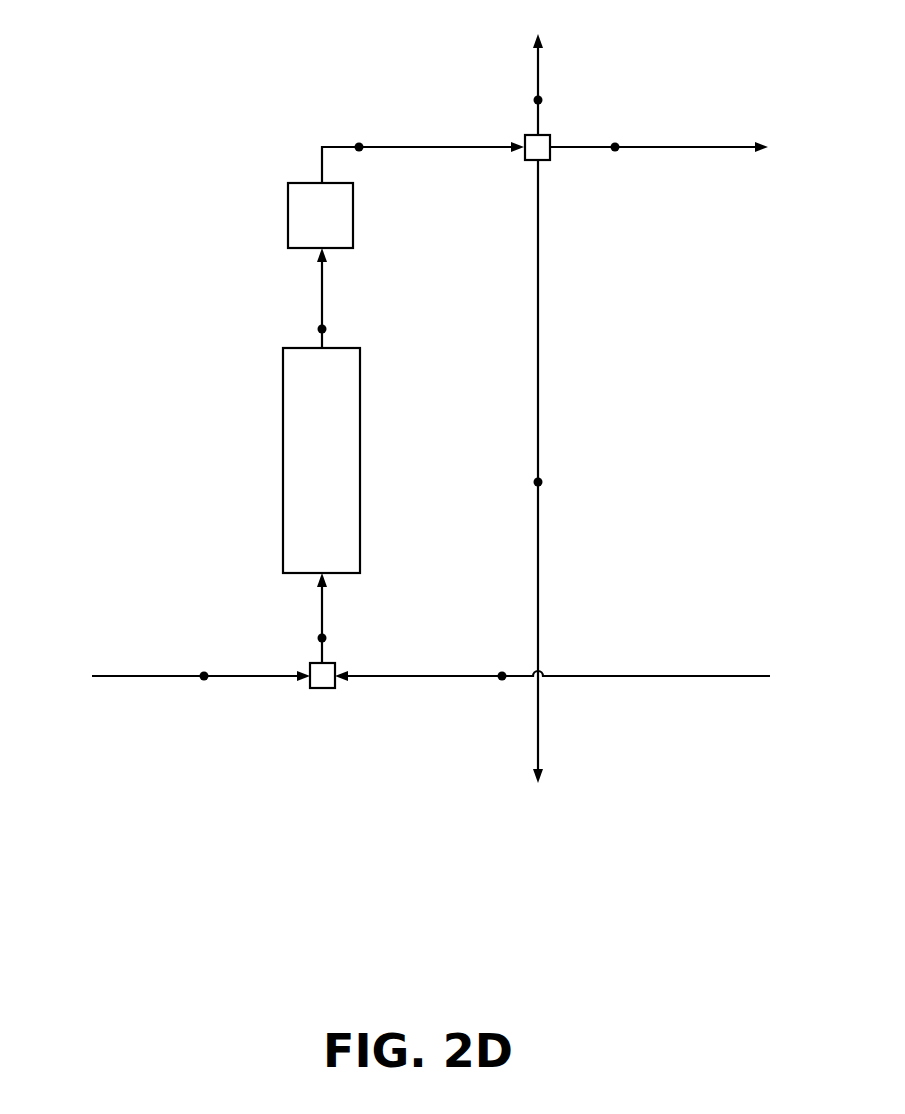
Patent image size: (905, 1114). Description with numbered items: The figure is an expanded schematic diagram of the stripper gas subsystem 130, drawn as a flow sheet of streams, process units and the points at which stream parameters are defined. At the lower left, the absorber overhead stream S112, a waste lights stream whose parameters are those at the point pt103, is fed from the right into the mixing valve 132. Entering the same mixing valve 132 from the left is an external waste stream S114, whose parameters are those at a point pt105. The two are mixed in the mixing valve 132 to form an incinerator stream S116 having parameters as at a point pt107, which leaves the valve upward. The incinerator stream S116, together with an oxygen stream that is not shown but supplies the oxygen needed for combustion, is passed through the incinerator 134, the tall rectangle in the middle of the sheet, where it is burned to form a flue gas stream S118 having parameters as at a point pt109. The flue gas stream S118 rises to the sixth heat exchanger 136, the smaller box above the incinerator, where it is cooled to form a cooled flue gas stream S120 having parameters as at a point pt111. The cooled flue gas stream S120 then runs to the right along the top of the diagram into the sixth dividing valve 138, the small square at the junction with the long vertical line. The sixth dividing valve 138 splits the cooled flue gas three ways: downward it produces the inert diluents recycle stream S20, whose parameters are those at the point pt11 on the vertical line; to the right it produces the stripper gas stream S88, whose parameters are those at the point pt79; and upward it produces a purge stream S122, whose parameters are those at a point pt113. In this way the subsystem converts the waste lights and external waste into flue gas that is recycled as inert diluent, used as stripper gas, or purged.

The stripper gas subsystem 130 is at (200, 336).
The mixing valve 132 is at (322, 677).
The incinerator 134 is at (321, 460).
The sixth heat exchanger 136 is at (320, 215).
The sixth dividing valve 138 is at (540, 147).
The point pt103 is at (502, 680).
The point pt105 is at (204, 670).
The point pt107 is at (324, 630).
The point pt109 is at (325, 315).
The point pt111 is at (362, 133).
The point pt113 is at (540, 78).
The point pt11 is at (540, 478).
The point pt79 is at (615, 133).
The absorber overhead stream S112 is at (413, 680).
The external waste stream S114 is at (273, 670).
The incinerator stream S116 is at (324, 600).
The flue gas stream S118 is at (325, 285).
The cooled flue gas stream S120 is at (473, 145).
The purge stream S122 is at (542, 53).
The inert diluents recycle stream S20 is at (540, 535).
The stripper gas stream S88 is at (692, 145).